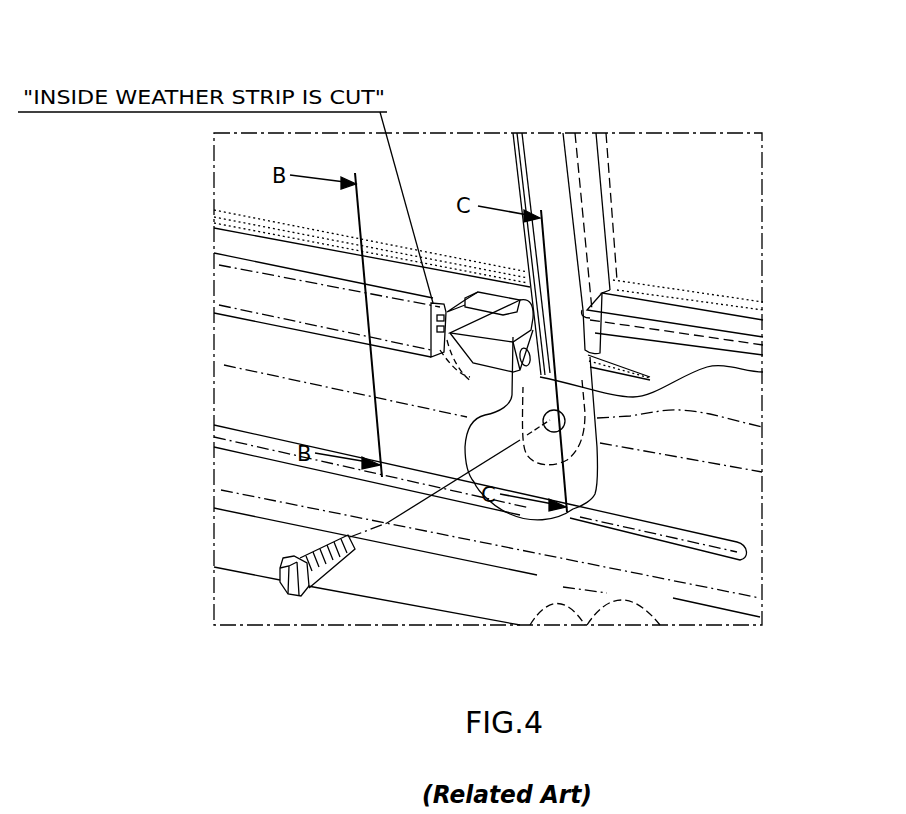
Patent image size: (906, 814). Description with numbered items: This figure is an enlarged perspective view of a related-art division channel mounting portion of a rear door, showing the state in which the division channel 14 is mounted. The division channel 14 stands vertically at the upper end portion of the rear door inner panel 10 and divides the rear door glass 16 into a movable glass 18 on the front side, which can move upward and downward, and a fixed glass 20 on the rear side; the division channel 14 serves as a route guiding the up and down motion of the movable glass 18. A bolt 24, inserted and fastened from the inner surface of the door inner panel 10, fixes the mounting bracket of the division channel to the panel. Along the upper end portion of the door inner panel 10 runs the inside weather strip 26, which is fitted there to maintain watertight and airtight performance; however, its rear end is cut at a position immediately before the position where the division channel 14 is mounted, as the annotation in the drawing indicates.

The rear door inner panel 10 is at (733, 443).
The division channel 14 is at (587, 221).
The rear door glass 16 is at (645, 47).
The movable glass 18 is at (488, 153).
The fixed glass 20 is at (645, 150).
The bolt 24 is at (323, 598).
The inside weather strip 26 is at (238, 285).